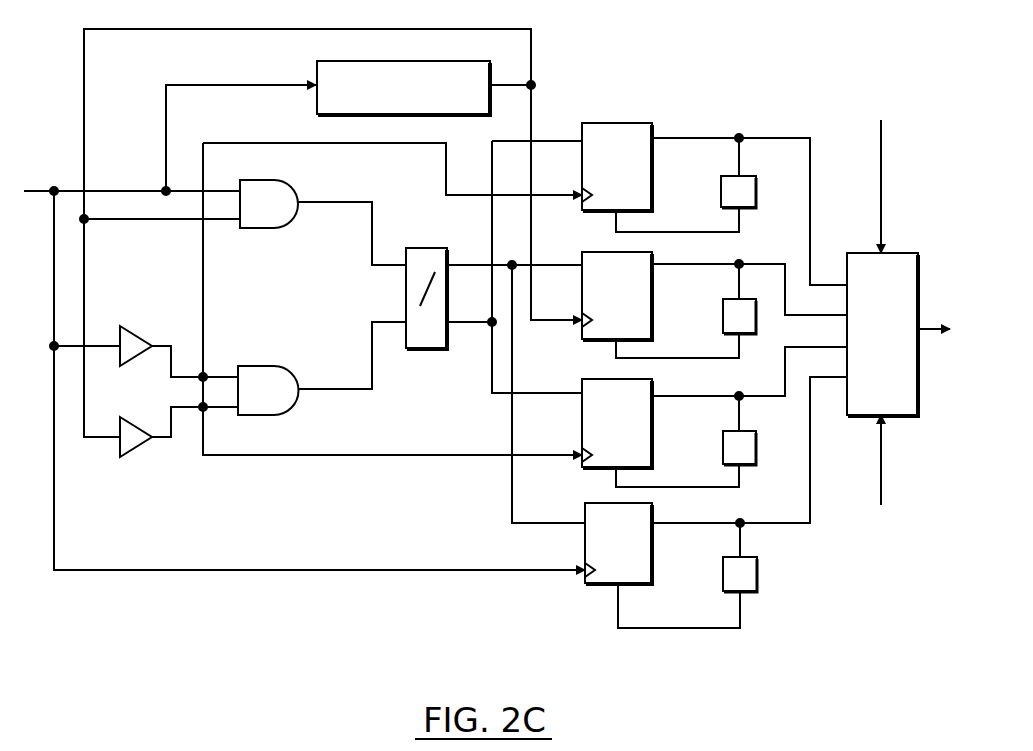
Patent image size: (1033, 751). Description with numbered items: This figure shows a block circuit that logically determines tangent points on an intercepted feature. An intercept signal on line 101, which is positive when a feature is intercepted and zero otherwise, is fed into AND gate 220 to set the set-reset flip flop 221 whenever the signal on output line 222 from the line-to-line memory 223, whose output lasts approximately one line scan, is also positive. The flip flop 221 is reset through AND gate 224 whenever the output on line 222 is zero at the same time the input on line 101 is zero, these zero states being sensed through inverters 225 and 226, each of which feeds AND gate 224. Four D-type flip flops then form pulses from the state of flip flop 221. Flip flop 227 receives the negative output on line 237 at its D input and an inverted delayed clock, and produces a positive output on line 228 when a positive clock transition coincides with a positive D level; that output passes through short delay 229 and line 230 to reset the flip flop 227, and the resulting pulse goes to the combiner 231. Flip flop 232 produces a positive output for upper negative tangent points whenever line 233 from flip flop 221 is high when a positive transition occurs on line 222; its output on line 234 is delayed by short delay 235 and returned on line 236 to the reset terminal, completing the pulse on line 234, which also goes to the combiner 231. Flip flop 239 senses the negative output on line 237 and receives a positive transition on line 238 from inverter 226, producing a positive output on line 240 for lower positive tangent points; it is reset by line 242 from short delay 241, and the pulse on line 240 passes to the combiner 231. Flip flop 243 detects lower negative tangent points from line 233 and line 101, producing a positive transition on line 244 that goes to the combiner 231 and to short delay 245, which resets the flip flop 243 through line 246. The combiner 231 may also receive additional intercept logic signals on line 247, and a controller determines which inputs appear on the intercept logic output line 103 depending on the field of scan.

The intercept signal line 101 is at (38, 190).
The intercept logic output line 103 is at (930, 322).
The AND gate 220 is at (290, 183).
The set-reset flip flop 221 is at (406, 291).
The output line of line-to-line memory 222 is at (249, 32).
The line-to-line memory 223 is at (313, 99).
The AND gate 224 is at (278, 367).
The inverter 225 is at (138, 328).
The inverter 226 is at (132, 456).
The D-type flip flop 227 is at (612, 123).
The output line 228 is at (678, 138).
The short delay 229 is at (720, 193).
The reset line 230 is at (738, 237).
The combiner 231 is at (860, 253).
The flip flop 232 is at (598, 340).
The output line of set-reset flip flop 233 is at (476, 263).
The output line 234 is at (718, 265).
The short delay 235 is at (723, 333).
The reset line 236 is at (730, 361).
The negative output line 237 is at (470, 332).
The clock line 238 is at (305, 457).
The flip flop 239 is at (582, 413).
The output line 240 is at (718, 397).
The short delay 241 is at (723, 469).
The reset line 242 is at (737, 489).
The flip flop 243 is at (600, 585).
The output line 244 is at (725, 522).
The short delay 245 is at (757, 572).
The reset line 246 is at (713, 628).
The additional intercept logic input line 247 is at (882, 447).